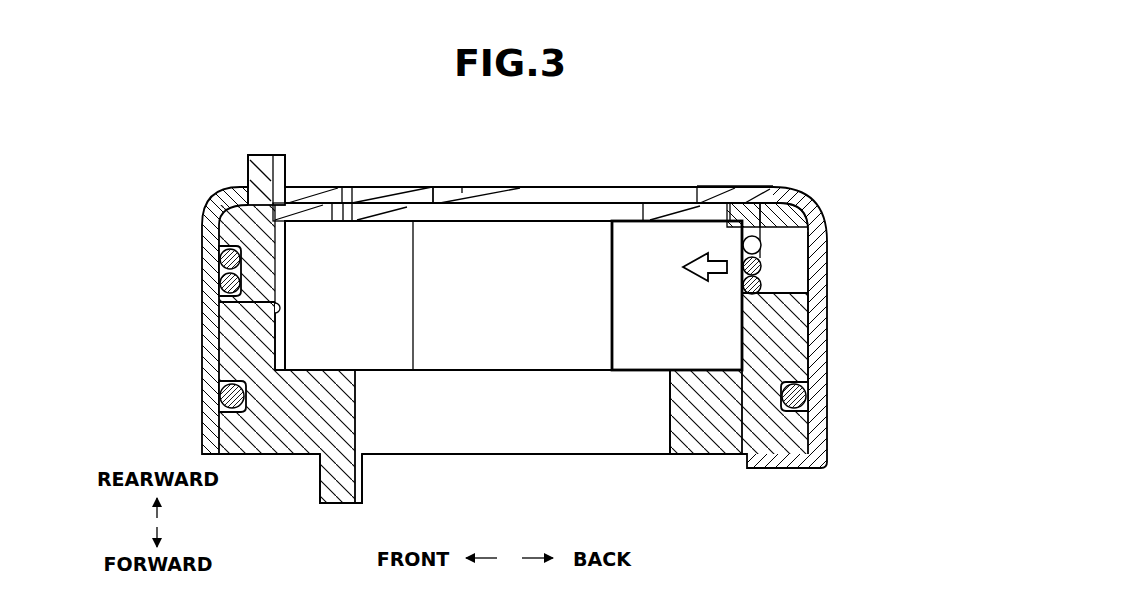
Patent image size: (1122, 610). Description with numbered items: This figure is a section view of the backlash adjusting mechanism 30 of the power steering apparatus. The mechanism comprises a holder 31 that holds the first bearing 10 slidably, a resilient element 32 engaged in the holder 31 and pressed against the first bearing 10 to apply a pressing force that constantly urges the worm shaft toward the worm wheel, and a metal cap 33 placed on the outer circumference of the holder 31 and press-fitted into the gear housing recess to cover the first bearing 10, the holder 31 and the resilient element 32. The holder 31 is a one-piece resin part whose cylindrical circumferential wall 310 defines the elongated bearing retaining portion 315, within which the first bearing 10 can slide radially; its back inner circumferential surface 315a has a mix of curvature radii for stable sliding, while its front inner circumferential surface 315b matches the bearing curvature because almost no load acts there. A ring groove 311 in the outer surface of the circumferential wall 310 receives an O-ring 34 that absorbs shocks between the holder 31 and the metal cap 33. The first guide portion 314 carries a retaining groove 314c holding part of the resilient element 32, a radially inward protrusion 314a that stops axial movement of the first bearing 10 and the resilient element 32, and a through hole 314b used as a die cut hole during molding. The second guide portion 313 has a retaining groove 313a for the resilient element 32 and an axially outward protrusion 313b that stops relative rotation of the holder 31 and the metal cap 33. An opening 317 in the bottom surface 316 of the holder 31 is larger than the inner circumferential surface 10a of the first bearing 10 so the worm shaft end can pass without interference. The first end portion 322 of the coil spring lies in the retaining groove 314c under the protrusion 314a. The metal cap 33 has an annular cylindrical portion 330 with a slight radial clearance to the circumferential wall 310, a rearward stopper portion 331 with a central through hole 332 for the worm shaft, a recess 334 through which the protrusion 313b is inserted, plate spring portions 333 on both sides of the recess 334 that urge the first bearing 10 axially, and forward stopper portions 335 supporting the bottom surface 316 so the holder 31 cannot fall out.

The first bearing 10 is at (642, 237).
The inner circumferential surface of the first bearing 10a is at (612, 243).
The backlash adjusting mechanism 30 is at (799, 176).
The holder 31 is at (717, 440).
The resilient element 32 is at (770, 257).
The metal cap 33 is at (832, 217).
The O-ring 34 is at (807, 426).
The circumferential wall 310 is at (243, 337).
The ring groove 311 is at (224, 398).
The second guide portion 313 is at (230, 220).
The retaining groove 313a is at (224, 282).
The protrusion 313b is at (263, 163).
The first guide portion 314 is at (796, 222).
The protrusion 314a is at (740, 213).
The through hole 314b is at (806, 292).
The retaining groove 314c is at (800, 330).
The bearing retaining portion 315 is at (272, 347).
The back inner circumferential surface 315a is at (727, 343).
The front inner circumferential surface 315b is at (222, 302).
The bottom surface 316 is at (277, 457).
The opening 317 is at (669, 420).
The first end portion 322 is at (752, 236).
The annular cylindrical portion 330 is at (812, 268).
The stopper portion 331 is at (771, 197).
The through hole 332 is at (693, 200).
The plate spring portions 333 is at (385, 198).
The recess 334 is at (247, 177).
The stopper portions 335 is at (807, 463).